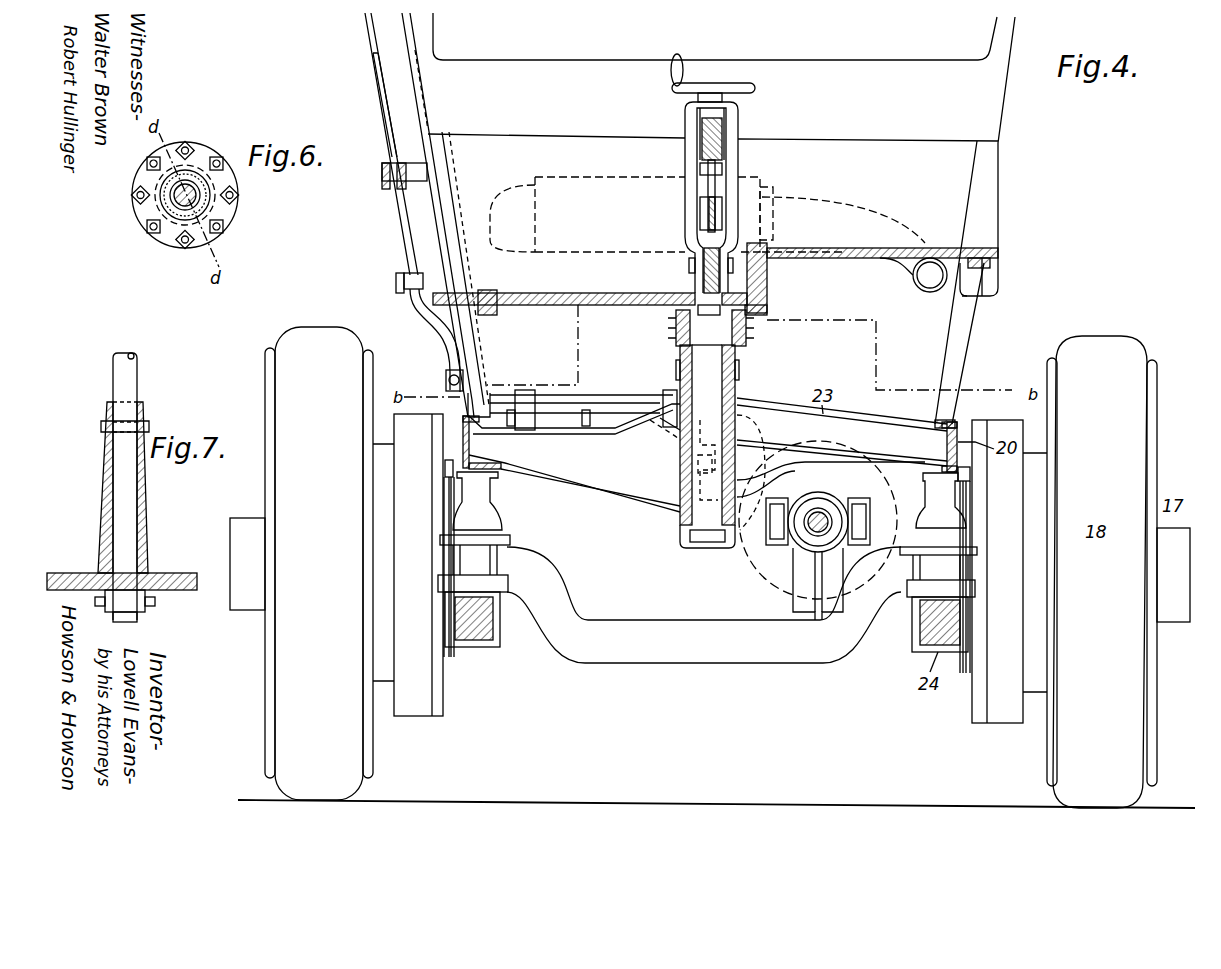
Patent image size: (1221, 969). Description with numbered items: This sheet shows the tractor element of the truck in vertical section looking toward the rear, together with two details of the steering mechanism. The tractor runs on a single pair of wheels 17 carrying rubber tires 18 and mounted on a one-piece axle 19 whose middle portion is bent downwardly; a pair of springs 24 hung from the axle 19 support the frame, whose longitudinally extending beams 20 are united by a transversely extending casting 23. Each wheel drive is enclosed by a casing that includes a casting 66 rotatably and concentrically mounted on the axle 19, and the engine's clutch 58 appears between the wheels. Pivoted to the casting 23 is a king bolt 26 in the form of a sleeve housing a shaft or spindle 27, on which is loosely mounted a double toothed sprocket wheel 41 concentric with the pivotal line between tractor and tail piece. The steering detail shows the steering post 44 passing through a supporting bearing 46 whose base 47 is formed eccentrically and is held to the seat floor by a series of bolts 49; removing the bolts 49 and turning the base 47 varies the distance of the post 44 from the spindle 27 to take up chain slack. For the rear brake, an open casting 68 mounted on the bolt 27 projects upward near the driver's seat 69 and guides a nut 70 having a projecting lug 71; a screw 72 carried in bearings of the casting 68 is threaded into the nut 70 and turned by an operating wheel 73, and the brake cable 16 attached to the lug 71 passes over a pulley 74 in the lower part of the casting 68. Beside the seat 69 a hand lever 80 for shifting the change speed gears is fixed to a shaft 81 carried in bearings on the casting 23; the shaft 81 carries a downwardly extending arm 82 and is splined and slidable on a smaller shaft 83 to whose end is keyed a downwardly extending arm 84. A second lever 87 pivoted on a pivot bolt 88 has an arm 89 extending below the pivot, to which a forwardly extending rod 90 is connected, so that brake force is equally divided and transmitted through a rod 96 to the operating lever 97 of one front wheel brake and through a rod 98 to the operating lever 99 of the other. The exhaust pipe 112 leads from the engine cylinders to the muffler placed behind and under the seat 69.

In FIG. 4, the cable 16 is at (700, 230).
In FIG. 4, the wheels 17 is at (247, 548).
In FIG. 4, the rubber tires 18 is at (330, 324).
In FIG. 4, the axle 19 is at (704, 605).
In FIG. 4, the longitudinally extending beams 20 is at (480, 445).
In FIG. 4, the transversely extending casting 23 is at (606, 471).
In FIG. 4, the springs 24 is at (476, 648).
In FIG. 4, the king bolt 26 is at (700, 372).
In FIG. 4, the shaft or spindle 27 is at (746, 328).
In FIG. 4, the double toothed sprocket wheel 41 is at (676, 322).
In FIG. 6, the steering post 44 is at (192, 212).
In FIG. 7, the steering post 44 is at (128, 375).
In FIG. 6, the supporting bearing 46 is at (162, 202).
In FIG. 7, the supporting bearing 46 is at (147, 535).
In FIG. 6, the base 47 is at (207, 158).
In FIG. 6, the bolts 49 is at (230, 195).
In FIG. 4, the clutch 58 is at (775, 558).
In FIG. 4, the casting 66 is at (408, 565).
In FIG. 4, the open casting 68 is at (740, 117).
In FIG. 4, the driver's seat 69 is at (721, 154).
In FIG. 4, the nut 70 is at (705, 186).
In FIG. 4, the projecting lug 71 is at (700, 169).
In FIG. 4, the screw 72 is at (712, 145).
In FIG. 4, the operating wheel 73 is at (757, 89).
In FIG. 4, the pulley 74 is at (700, 286).
In FIG. 4, the hand lever 80 is at (448, 212).
In FIG. 4, the shaft 81 is at (614, 394).
In FIG. 4, the downwardly extending arm 82 is at (672, 428).
In FIG. 4, the smaller shaft 83 is at (710, 460).
In FIG. 4, the downwardly extending arm 84 is at (745, 440).
In FIG. 4, the second lever 87 is at (400, 216).
In FIG. 4, the pivot bolt 88 is at (396, 281).
In FIG. 4, the arm 89 is at (450, 345).
In FIG. 4, the forwardly extending rod 90 is at (446, 378).
In FIG. 4, the rod 96 is at (970, 474).
In FIG. 4, the operating lever 97 is at (963, 505).
In FIG. 4, the rod 98 is at (445, 468).
In FIG. 4, the operating lever 99 is at (451, 500).
In FIG. 4, the exhaust pipe 112 is at (930, 286).